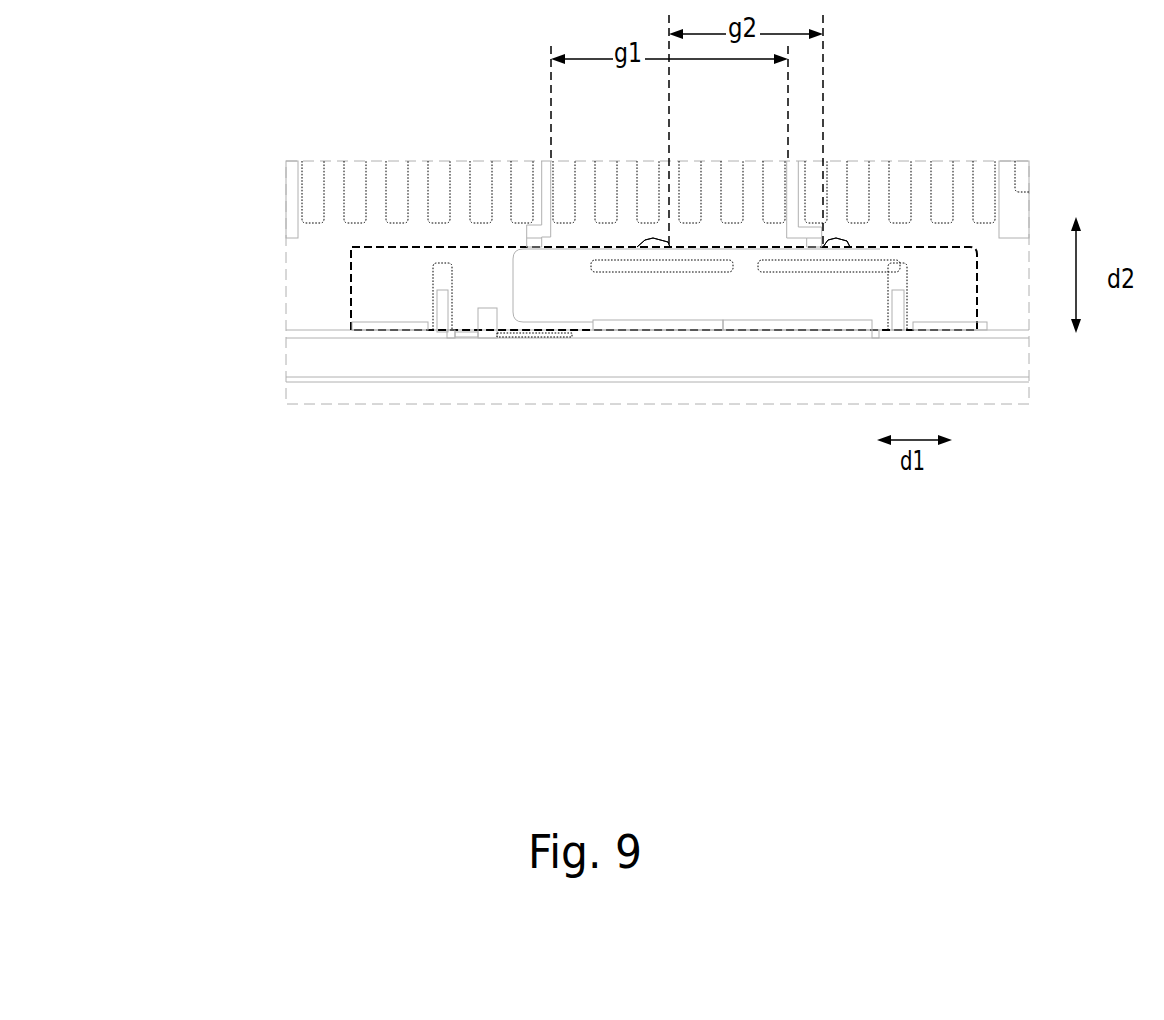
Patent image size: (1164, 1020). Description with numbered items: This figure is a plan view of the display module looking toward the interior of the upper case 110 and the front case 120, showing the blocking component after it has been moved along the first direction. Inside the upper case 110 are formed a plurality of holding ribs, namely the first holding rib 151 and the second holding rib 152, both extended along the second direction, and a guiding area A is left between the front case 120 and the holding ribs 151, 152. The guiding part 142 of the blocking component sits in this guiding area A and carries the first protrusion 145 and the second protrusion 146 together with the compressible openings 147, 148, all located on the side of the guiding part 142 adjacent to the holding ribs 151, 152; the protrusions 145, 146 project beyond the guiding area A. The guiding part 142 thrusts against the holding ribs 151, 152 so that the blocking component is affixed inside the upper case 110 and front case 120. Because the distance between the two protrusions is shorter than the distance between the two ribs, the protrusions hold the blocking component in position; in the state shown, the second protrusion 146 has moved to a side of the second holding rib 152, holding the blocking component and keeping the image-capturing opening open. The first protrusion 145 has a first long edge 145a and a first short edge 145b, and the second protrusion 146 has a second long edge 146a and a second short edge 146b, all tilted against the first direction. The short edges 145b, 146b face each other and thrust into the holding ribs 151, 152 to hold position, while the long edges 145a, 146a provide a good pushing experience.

The upper case 110 is at (298, 258).
The front case 120 is at (292, 357).
The guiding part 142 is at (518, 293).
The first protrusion 145 is at (732, 121).
The first long edge 145a is at (643, 240).
The first short edge 145b is at (663, 240).
The second protrusion 146 is at (940, 123).
The second long edge 146a is at (848, 238).
The second short edge 146b is at (826, 238).
The compressible opening 147 is at (597, 260).
The compressible opening 148 is at (883, 260).
The first holding rib 151 is at (550, 166).
The second holding rib 152 is at (790, 165).
The guiding area A is at (977, 278).